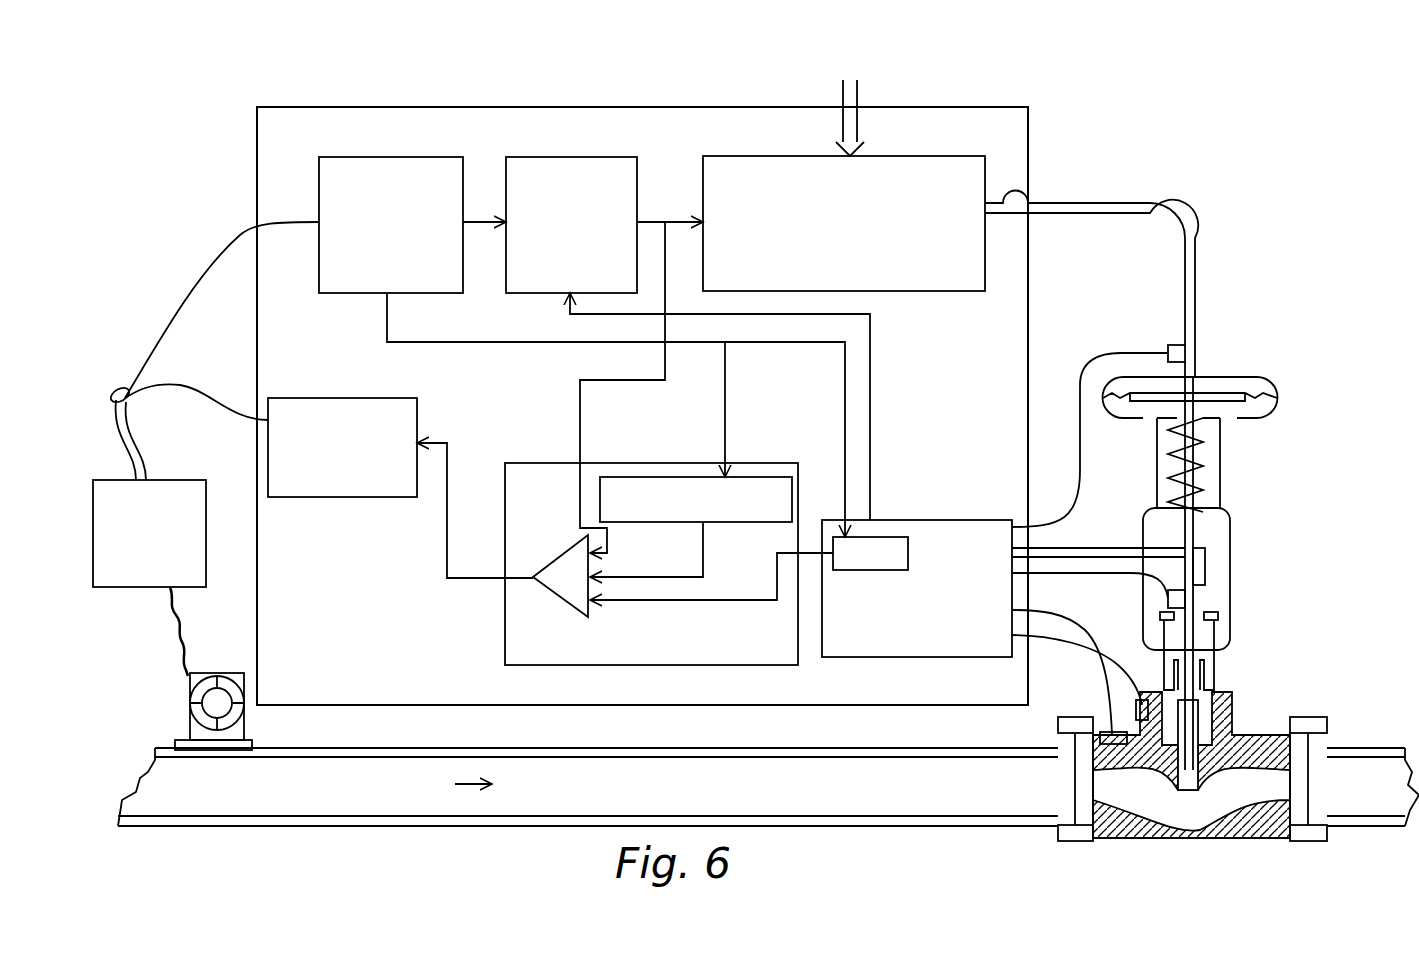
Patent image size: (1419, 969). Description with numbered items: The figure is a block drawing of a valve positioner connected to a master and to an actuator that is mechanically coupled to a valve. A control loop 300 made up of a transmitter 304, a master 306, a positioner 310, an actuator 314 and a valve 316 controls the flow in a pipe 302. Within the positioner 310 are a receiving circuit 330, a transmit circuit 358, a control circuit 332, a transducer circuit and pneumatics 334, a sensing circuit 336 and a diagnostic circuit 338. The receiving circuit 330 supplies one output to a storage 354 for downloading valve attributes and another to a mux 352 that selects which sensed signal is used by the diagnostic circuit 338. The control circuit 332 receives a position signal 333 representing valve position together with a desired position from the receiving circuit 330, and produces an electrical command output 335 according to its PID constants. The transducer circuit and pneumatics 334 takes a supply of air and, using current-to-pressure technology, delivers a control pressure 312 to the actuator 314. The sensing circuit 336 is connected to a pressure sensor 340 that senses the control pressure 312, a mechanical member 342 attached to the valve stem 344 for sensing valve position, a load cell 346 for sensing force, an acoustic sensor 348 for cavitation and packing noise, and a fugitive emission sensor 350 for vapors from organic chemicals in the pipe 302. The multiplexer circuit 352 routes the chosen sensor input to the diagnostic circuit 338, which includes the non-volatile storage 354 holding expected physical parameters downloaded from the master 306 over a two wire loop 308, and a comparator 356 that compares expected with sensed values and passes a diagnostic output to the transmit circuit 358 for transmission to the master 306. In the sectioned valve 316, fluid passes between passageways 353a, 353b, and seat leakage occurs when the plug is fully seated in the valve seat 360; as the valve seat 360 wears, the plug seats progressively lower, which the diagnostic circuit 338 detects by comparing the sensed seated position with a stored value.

The control loop 300 is at (348, 80).
The pipe 302 is at (850, 748).
The transmitter 304 is at (190, 722).
The master 306 is at (130, 568).
The two wire loop 308 is at (128, 402).
The positioner 310 is at (352, 626).
The control pressure 312 is at (1028, 180).
The actuator 314 is at (1228, 375).
The valve 316 is at (1262, 718).
The receiving circuit 330 is at (372, 277).
The control circuit 332 is at (552, 277).
The position signal 333 is at (870, 325).
The transducer circuit and pneumatics 334 is at (870, 277).
The electrical command output 335 is at (664, 234).
The sensing circuit 336 is at (983, 617).
The diagnostic circuit 338 is at (505, 618).
The pressure sensor 340 is at (1170, 345).
The mechanical member 342 is at (1082, 505).
The valve stem 344 is at (1230, 532).
The load cell 346 is at (1168, 598).
The acoustic sensor 348 is at (1105, 732).
The fugitive emission sensor 350 is at (1142, 700).
The multiplexer circuit 352 is at (845, 570).
The passageway 353a is at (1130, 800).
The passageway 353b is at (1280, 790).
The storage 354 is at (782, 511).
The comparator 356 is at (553, 560).
The transmit circuit 358 is at (322, 491).
The valve seat 360 is at (1185, 812).